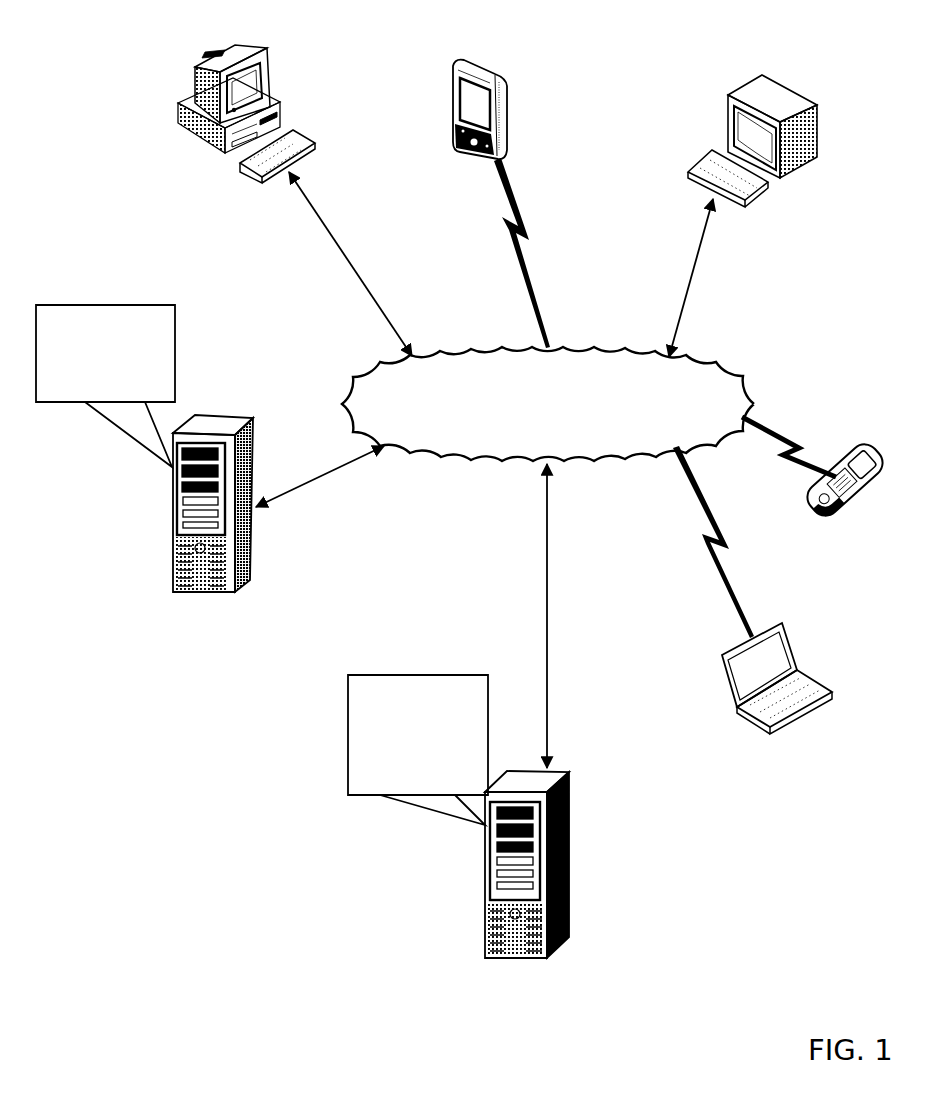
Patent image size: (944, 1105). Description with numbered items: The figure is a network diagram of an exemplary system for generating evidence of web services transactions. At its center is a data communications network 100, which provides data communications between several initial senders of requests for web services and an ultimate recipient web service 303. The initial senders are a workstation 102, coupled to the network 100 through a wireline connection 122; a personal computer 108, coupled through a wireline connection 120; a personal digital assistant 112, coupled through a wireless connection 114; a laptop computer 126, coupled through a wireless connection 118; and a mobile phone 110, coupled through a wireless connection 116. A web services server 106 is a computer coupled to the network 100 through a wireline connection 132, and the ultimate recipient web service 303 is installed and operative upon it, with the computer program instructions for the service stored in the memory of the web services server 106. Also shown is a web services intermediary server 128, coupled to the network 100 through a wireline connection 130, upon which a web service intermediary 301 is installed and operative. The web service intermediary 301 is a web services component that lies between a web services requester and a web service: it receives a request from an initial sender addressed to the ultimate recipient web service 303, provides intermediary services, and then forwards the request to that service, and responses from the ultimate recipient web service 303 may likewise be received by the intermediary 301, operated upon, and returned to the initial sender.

The data communications network 100 is at (548, 404).
The workstation 102 is at (761, 120).
The web services server 106 is at (515, 906).
The personal computer 108 is at (283, 97).
The mobile phone 110 is at (845, 522).
The personal digital assistant 112 is at (496, 97).
The wireless connection 114 is at (525, 253).
The wireless connection 116 is at (789, 447).
The wireless connection 118 is at (712, 542).
The wireline connection 120 is at (350, 264).
The wireline connection 122 is at (684, 278).
The laptop computer 126 is at (777, 689).
The web services intermediary server 128 is at (201, 543).
The wireline connection 130 is at (320, 476).
The wireline connection 132 is at (548, 616).
The web service intermediary 301 is at (105, 386).
The ultimate recipient web service 303 is at (418, 750).